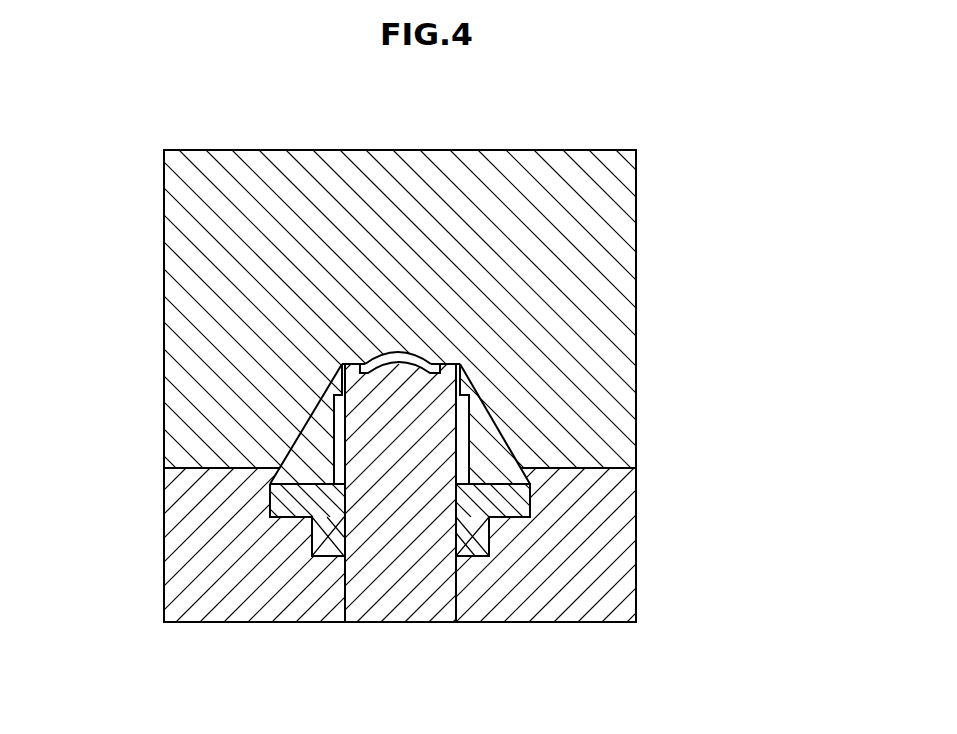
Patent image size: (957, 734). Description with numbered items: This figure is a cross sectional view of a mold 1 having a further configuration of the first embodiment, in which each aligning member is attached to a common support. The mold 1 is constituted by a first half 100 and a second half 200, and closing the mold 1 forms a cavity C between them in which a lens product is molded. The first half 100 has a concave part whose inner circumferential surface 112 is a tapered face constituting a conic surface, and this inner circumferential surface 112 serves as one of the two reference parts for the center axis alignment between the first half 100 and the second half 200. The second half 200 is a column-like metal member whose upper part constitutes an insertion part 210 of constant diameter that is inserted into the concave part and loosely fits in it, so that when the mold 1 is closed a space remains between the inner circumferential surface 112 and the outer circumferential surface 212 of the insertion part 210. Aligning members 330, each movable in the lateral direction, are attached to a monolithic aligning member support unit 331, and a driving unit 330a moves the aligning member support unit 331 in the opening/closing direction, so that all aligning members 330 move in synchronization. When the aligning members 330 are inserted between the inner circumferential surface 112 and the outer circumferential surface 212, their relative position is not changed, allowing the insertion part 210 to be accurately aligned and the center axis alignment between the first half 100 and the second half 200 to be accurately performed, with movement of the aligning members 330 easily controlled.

The mold 1 is at (658, 191).
The first half 100 is at (638, 246).
The inner circumferential surface 112 is at (322, 396).
The second half 200 is at (402, 462).
The insertion part 210 is at (438, 390).
The outer circumferential surface 212 is at (458, 412).
The aligning member 330 is at (318, 447).
The aligning member support unit 331 is at (493, 497).
The driving unit 330a is at (473, 547).
The cavity C is at (398, 358).